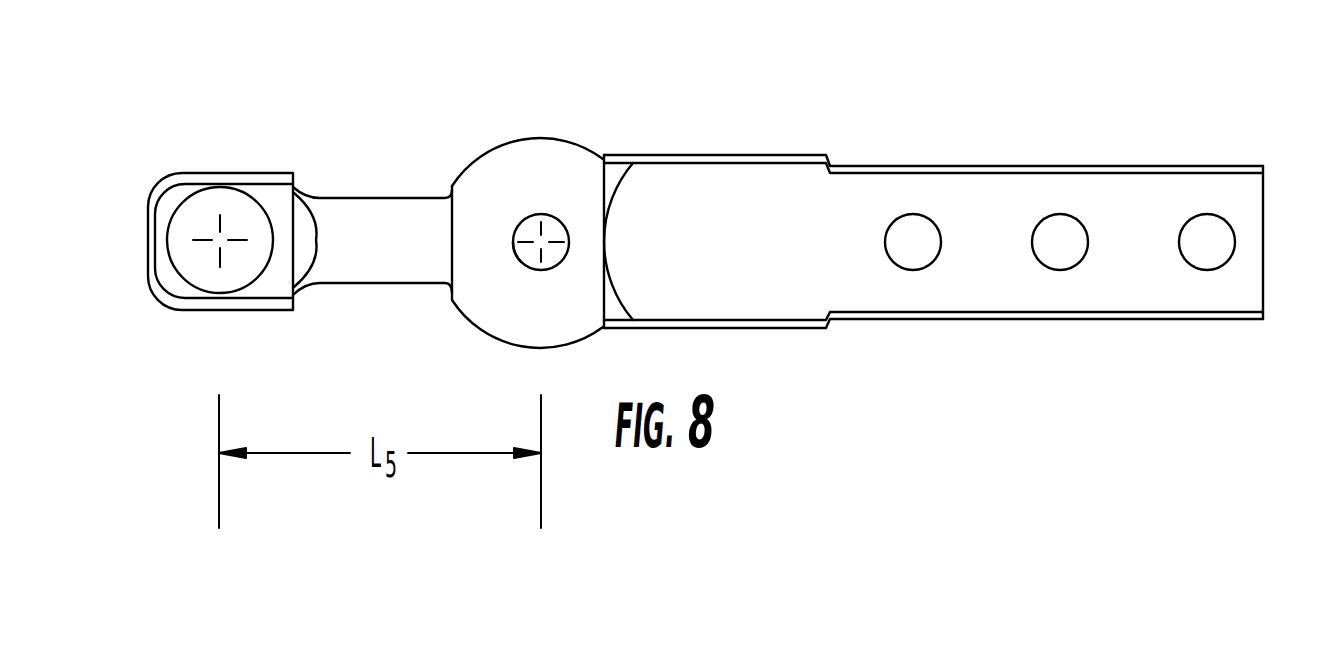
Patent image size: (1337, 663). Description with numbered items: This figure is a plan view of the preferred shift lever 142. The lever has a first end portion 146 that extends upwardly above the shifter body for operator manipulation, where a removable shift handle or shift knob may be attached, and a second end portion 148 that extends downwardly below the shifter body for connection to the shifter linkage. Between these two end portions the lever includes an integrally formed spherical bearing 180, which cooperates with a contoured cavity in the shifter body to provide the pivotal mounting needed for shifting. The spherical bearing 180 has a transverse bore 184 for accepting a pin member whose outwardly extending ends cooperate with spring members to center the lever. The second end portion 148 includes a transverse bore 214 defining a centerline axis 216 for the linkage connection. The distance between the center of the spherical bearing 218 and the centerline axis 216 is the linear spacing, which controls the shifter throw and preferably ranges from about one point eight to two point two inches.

The shift lever 142 is at (682, 126).
The first end portion 146 is at (1265, 172).
The second end portion 148 is at (153, 190).
The spherical bearing 180 is at (495, 157).
The transverse bore 184 is at (520, 262).
The transverse bore 214 is at (203, 187).
The centerline axis 216 is at (222, 235).
The center of the spherical bearing 218 is at (543, 240).